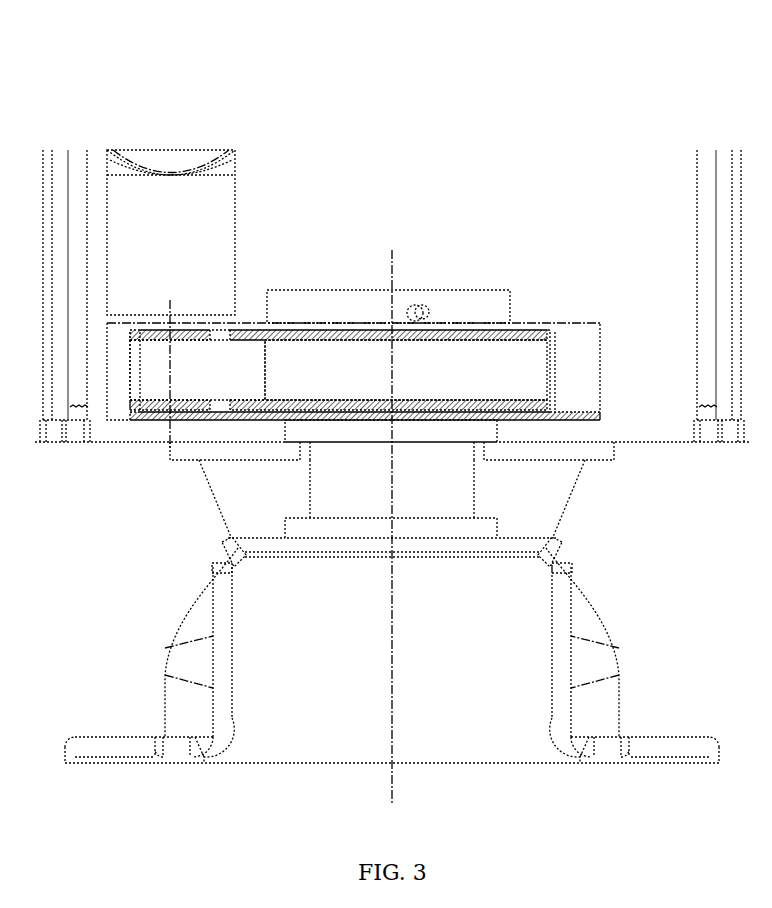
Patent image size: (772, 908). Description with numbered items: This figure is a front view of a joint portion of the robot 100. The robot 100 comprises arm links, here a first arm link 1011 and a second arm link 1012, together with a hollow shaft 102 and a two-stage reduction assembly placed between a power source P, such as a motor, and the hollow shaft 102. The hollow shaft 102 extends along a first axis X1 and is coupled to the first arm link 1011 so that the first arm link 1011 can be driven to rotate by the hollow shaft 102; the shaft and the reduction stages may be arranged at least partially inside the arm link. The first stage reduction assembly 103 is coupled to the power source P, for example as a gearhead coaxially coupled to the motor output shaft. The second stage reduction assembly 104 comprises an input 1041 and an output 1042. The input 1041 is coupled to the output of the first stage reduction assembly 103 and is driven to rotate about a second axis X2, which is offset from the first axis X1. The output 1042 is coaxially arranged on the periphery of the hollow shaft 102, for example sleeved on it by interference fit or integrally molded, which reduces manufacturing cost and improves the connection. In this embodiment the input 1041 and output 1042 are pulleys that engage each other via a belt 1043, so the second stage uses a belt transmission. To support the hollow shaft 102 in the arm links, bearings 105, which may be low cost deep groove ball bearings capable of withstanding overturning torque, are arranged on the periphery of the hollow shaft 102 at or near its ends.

The robot 100 is at (354, 80).
The first arm link 1011 is at (652, 170).
The second arm link 1012 is at (204, 611).
The hollow shaft 102 is at (464, 503).
The first stage reduction assembly 103 is at (224, 247).
The second stage reduction assembly 104 is at (556, 323).
The input 1041 is at (196, 333).
The output 1042 is at (298, 303).
The belt 1043 is at (536, 380).
The bearing 105 is at (371, 436).
The power source P is at (227, 173).
The first axis X1 is at (377, 527).
The second axis X2 is at (159, 375).